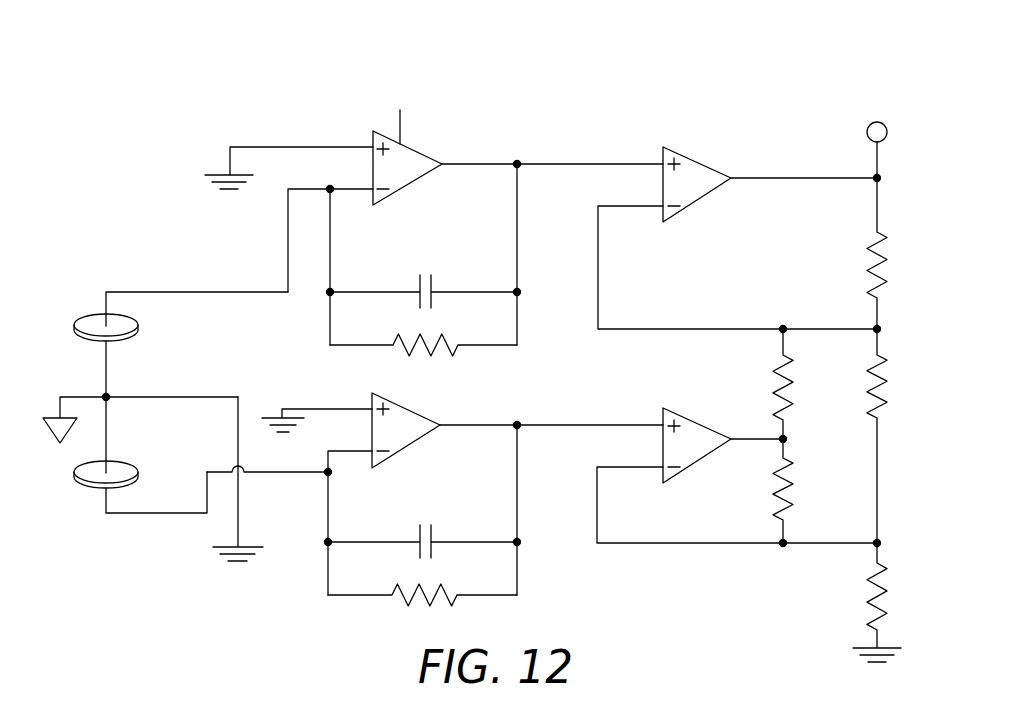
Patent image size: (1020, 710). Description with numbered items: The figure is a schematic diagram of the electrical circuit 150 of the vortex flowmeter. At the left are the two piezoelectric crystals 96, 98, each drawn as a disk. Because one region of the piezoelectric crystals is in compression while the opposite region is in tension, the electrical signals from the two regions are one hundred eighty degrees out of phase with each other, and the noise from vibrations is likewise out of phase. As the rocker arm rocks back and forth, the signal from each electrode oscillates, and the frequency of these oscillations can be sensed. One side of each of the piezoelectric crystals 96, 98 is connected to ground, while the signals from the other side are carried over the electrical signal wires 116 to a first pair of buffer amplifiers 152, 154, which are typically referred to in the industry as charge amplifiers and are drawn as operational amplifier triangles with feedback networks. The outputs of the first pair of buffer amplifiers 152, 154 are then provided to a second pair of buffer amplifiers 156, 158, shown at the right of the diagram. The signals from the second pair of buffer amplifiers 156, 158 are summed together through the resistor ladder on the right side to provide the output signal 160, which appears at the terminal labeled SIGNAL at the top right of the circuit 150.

The electrical circuit 150 is at (605, 117).
The piezoelectric crystal 96 is at (137, 320).
The piezoelectric crystal 98 is at (137, 462).
The electrical signal wire 116 is at (193, 292).
The buffer amplifier 152 is at (405, 172).
The buffer amplifier 154 is at (403, 415).
The buffer amplifier 156 is at (700, 190).
The buffer amplifier 158 is at (700, 423).
The output signal 160 is at (868, 128).